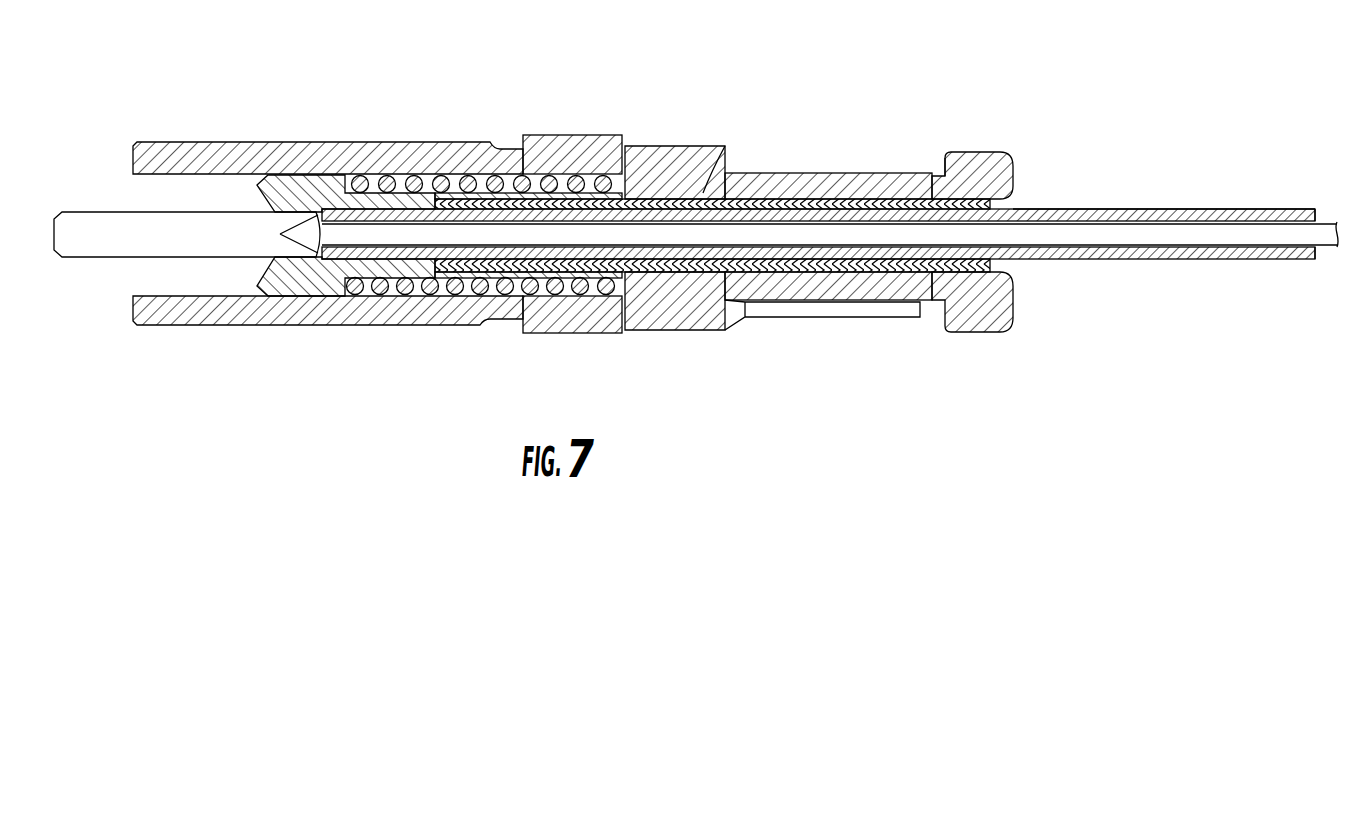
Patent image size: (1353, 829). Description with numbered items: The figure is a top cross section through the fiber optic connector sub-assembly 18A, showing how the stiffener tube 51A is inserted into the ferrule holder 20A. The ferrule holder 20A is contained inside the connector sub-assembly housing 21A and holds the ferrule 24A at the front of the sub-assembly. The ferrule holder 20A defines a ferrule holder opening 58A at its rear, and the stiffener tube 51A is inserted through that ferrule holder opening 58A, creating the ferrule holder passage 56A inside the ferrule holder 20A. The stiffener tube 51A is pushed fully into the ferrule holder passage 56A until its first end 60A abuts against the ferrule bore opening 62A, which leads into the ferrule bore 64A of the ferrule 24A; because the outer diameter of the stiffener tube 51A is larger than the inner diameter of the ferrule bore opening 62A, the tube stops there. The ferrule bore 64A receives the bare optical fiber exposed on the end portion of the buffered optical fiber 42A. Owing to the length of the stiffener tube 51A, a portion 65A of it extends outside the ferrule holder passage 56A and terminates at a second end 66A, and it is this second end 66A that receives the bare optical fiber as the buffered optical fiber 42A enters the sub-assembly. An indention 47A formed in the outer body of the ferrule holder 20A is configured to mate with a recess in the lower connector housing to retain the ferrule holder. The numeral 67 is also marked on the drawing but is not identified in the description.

The fiber optic connector sub-assembly 18A is at (596, 106).
The ferrule holder 20A is at (685, 146).
The connector sub-assembly housing 21A is at (412, 142).
The ferrule 24A is at (72, 212).
The buffered optical fiber 42A is at (1323, 250).
The indention 47A is at (870, 173).
The stiffener tube 51A is at (1105, 209).
The ferrule holder passage 56A is at (878, 270).
The ferrule holder opening 58A is at (1010, 192).
The first end of the stiffener tube 60A is at (728, 148).
The ferrule bore opening 62A is at (512, 236).
The ferrule bore 64A is at (350, 237).
The portion of the stiffener tube 65A is at (1198, 209).
The second end of the stiffener tube 66A is at (1318, 207).
The notch 67 is at (955, 182).